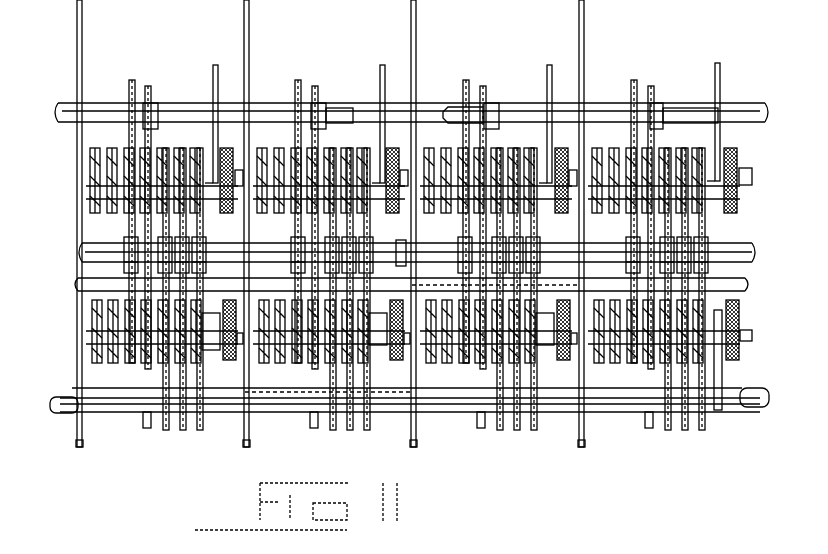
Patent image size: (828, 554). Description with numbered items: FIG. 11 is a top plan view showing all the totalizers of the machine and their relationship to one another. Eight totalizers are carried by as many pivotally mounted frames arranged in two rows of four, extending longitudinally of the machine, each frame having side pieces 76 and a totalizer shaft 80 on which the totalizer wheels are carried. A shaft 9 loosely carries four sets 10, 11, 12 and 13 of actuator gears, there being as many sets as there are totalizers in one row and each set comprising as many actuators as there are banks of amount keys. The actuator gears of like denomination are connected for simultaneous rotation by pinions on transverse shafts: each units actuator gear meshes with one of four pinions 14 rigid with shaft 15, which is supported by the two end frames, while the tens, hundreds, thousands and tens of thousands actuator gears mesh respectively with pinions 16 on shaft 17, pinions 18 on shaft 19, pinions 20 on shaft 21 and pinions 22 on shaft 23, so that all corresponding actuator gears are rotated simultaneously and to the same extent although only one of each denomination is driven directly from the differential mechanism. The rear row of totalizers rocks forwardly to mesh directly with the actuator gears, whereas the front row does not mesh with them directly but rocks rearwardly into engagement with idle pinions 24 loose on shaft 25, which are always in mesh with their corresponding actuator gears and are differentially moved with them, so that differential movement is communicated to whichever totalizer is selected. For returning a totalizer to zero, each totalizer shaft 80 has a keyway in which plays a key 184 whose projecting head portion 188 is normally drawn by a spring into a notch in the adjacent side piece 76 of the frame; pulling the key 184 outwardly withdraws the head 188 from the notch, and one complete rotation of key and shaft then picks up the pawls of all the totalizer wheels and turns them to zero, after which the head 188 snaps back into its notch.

The shaft 9 is at (400, 248).
The set of actuator gears 10 is at (700, 246).
The set of actuator gears 11 is at (545, 248).
The set of actuator gears 12 is at (361, 250).
The set of actuator gears 13 is at (196, 243).
The pinions 14 is at (184, 431).
The shaft 15 is at (127, 412).
The pinions 16 is at (166, 431).
The shaft 17 is at (63, 414).
The pinions 18 is at (147, 430).
The shaft 19 is at (153, 413).
The pinions 20 is at (166, 72).
The shaft 21 is at (337, 110).
The pinions 22 is at (131, 80).
The shaft 23 is at (262, 103).
The pinions 24 is at (288, 274).
The shaft 25 is at (577, 283).
The side pieces 76 is at (583, 48).
The totalizer shaft 80 is at (748, 168).
The key 184 is at (750, 200).
The head portion 188 is at (733, 148).